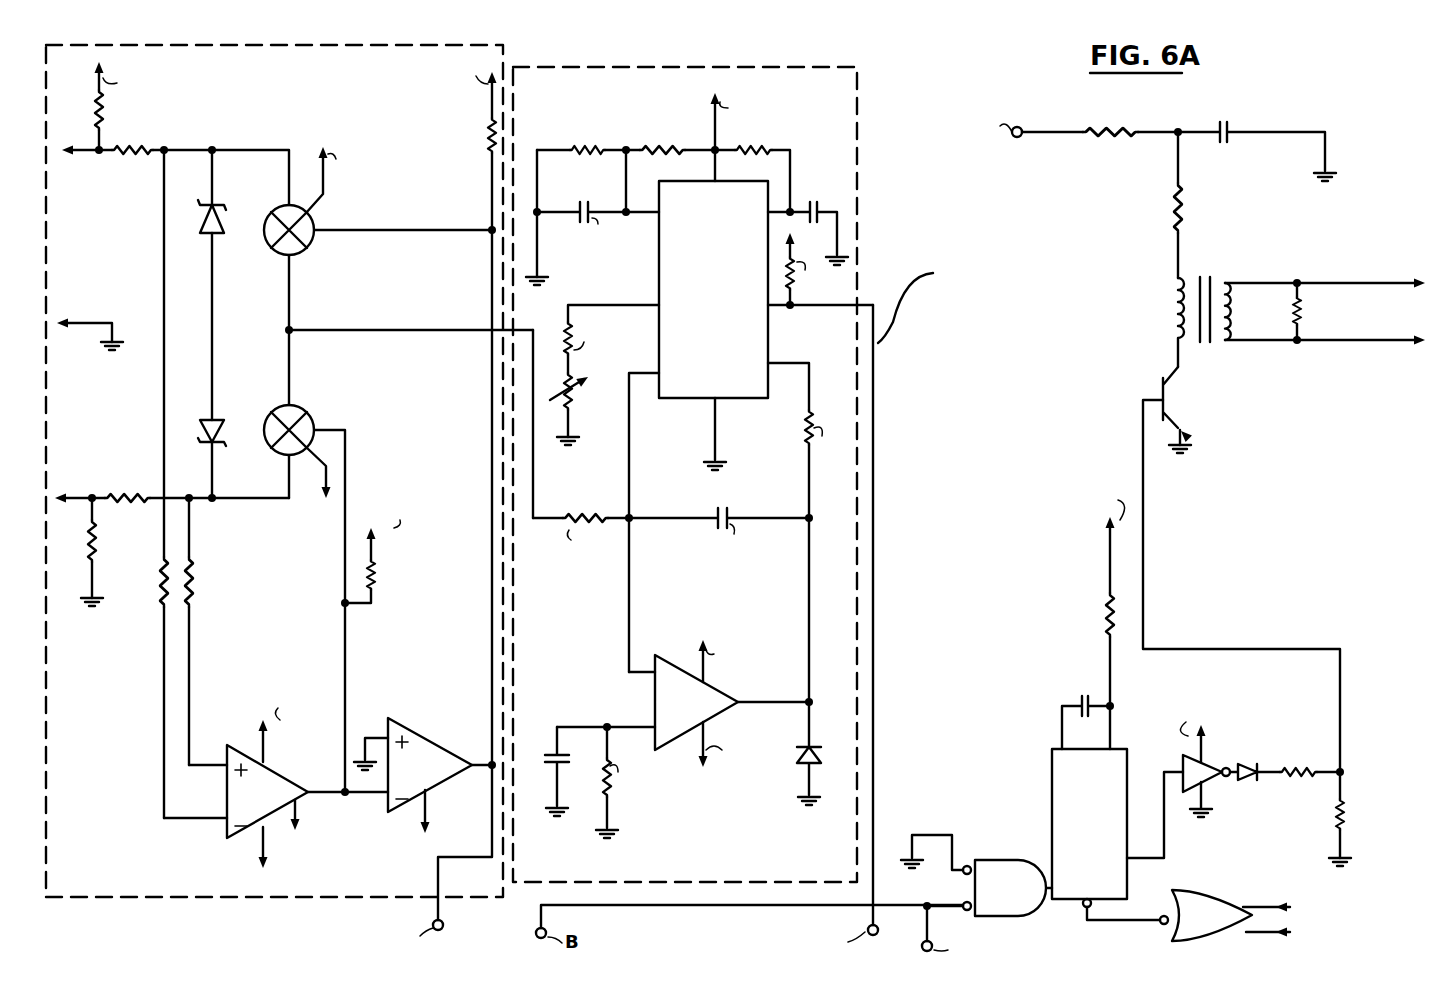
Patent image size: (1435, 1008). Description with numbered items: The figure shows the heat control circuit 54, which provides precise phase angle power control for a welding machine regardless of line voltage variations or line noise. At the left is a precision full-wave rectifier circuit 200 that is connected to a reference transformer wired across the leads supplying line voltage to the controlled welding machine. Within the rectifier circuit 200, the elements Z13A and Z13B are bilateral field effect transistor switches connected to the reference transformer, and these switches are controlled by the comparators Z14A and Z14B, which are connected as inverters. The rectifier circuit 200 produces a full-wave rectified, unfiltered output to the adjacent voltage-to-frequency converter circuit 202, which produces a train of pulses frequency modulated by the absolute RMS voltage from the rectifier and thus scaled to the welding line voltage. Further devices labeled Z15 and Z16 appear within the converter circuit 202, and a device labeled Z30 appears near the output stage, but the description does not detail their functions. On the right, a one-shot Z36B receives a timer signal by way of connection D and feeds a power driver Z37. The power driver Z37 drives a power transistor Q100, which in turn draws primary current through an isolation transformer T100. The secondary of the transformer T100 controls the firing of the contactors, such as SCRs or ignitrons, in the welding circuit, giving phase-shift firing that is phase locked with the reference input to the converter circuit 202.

The precision full-wave rectifier circuit 200 is at (286, 498).
The voltage-to-frequency converter circuit 202 is at (695, 510).
The heat control circuit 54 is at (1151, 543).
The bilateral FET switch Z13A is at (272, 410).
The bilateral FET switch Z13B is at (272, 249).
The comparator Z14A is at (276, 779).
The comparator Z14B is at (423, 776).
The timer integrated circuit Z15 is at (699, 391).
The operational amplifier Z16 is at (683, 735).
The one-shot Z36B is at (1108, 825).
The power driver Z37 is at (1207, 768).
The NOR gate Z30 is at (1252, 910).
The power transistor Q100 is at (1158, 393).
The isolation transformer T100 is at (1205, 272).